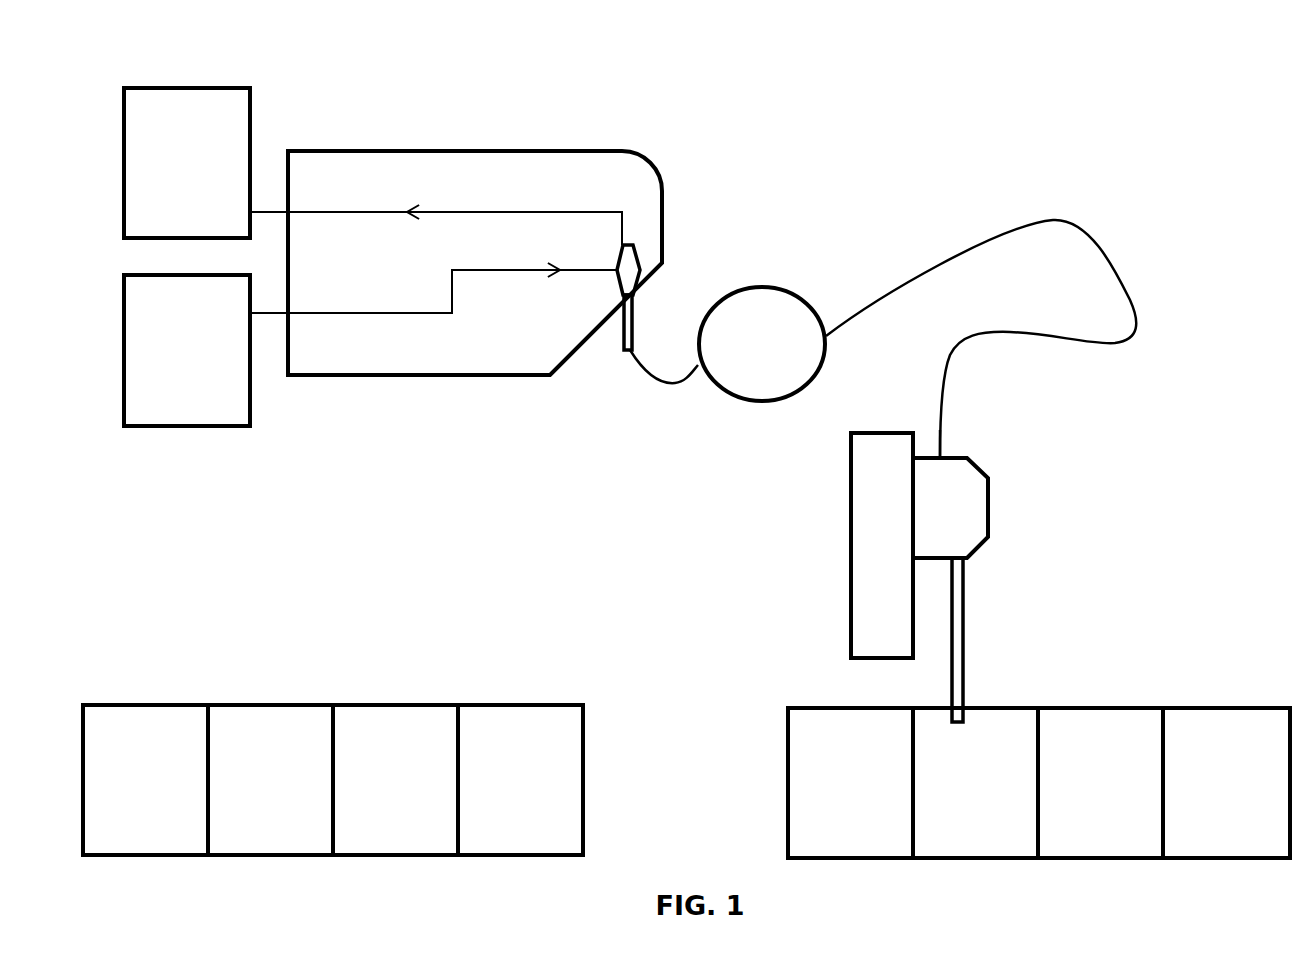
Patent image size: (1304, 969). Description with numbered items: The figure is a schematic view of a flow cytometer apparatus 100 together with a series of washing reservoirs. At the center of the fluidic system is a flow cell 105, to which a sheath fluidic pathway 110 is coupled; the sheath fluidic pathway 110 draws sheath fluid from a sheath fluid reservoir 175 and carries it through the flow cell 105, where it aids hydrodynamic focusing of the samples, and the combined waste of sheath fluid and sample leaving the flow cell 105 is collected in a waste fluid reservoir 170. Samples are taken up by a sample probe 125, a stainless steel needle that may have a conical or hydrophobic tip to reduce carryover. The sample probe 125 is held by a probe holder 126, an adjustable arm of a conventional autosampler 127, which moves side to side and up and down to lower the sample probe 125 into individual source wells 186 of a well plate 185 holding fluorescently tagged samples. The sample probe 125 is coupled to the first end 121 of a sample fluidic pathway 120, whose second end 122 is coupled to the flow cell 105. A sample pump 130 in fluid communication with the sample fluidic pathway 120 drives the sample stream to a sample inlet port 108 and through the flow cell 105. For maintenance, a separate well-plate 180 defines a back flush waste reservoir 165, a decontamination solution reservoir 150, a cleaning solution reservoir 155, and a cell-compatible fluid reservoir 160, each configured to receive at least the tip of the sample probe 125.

The flow cytometer apparatus 100 is at (1021, 94).
The flow cell 105 is at (644, 249).
The sample inlet port 108 is at (653, 297).
The sheath fluidic pathway 110 is at (424, 329).
The sample fluidic pathway 120 is at (1108, 224).
The first end of the sample fluidic pathway 121 is at (957, 429).
The second end of the sample fluidic pathway 122 is at (630, 384).
The sample probe 125 is at (980, 626).
The probe holder 126 is at (1003, 504).
The autosampler 127 is at (829, 590).
The sample pump 130 is at (484, 198).
The decontamination solution reservoir 150 is at (975, 783).
The cleaning solution reservoir 155 is at (1100, 783).
The cell-compatible fluid reservoir 160 is at (1226, 783).
The back flush waste reservoir 165 is at (850, 783).
The waste fluid reservoir 170 is at (187, 163).
The sheath fluid reservoir 175 is at (187, 350).
The well-plate 180 is at (764, 780).
The well plate 185 is at (277, 669).
The source wells 186 is at (333, 780).